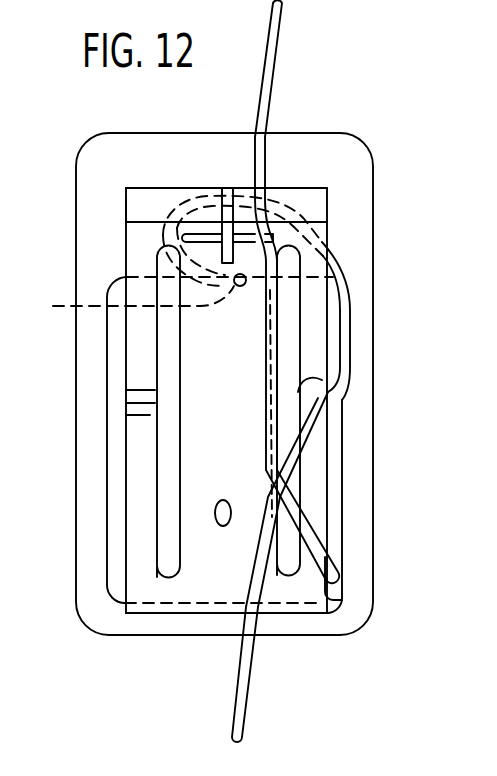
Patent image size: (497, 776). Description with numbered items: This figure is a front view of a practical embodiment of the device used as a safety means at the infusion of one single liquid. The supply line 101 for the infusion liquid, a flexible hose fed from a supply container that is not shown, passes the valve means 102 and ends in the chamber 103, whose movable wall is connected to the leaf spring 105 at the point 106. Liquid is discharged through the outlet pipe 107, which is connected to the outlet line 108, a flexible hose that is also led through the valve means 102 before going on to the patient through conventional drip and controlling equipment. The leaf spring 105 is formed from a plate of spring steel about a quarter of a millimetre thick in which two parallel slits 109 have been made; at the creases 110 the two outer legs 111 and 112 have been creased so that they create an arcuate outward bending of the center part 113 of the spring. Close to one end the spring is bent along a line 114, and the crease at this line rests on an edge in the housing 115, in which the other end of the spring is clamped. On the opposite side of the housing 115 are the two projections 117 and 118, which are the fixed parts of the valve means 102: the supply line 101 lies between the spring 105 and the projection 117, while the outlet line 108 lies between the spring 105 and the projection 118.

The supply line 101 is at (268, 83).
The valve means 102 is at (212, 222).
The chamber 103 is at (333, 510).
The leaf spring 105 is at (193, 460).
The point 106 is at (221, 527).
The outlet pipe 107 is at (171, 415).
The outlet line 108 is at (245, 700).
The parallel slits 109 is at (158, 540).
The creases 110 is at (137, 400).
The outer leg 111 is at (133, 430).
The outer leg 112 is at (312, 458).
The center part 113 is at (223, 343).
The bending line 114 is at (143, 222).
The housing 115 is at (132, 636).
The projection 117 is at (318, 262).
The projection 118 is at (228, 190).